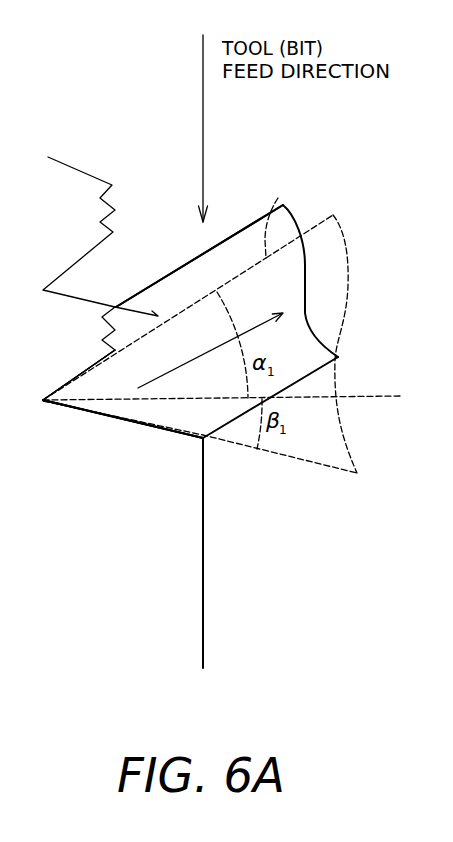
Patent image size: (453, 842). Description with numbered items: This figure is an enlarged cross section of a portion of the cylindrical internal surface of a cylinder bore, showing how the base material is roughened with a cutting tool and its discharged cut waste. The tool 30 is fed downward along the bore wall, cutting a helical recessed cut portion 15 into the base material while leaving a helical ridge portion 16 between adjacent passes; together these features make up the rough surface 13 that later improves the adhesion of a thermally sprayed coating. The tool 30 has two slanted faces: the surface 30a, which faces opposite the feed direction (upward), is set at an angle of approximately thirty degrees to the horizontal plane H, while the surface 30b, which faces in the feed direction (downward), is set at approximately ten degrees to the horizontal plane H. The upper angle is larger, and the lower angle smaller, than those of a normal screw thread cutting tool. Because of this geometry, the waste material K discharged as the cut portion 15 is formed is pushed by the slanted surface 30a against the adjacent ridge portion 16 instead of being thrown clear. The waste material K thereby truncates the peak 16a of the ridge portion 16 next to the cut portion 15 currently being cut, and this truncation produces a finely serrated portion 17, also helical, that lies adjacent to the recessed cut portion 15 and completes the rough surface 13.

The rough surface 13 is at (150, 487).
The recessed cut portion 15 is at (80, 411).
The ridge portion 16 is at (80, 312).
The peak 16a is at (143, 313).
The finely serrated portion 17 is at (133, 323).
The tool 30 is at (304, 460).
The surface facing opposite the tool feed direction 30a is at (282, 201).
The surface facing in the tool feed direction 30b is at (233, 444).
The horizontal plane H is at (370, 396).
The discharged waste material K is at (233, 234).